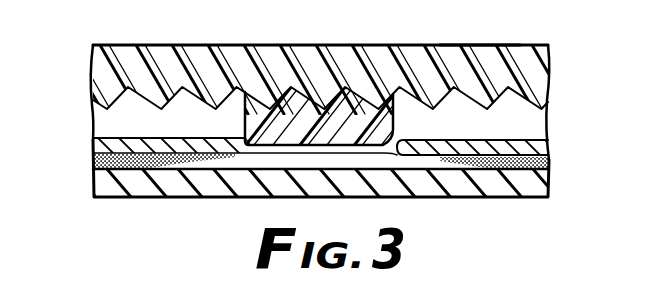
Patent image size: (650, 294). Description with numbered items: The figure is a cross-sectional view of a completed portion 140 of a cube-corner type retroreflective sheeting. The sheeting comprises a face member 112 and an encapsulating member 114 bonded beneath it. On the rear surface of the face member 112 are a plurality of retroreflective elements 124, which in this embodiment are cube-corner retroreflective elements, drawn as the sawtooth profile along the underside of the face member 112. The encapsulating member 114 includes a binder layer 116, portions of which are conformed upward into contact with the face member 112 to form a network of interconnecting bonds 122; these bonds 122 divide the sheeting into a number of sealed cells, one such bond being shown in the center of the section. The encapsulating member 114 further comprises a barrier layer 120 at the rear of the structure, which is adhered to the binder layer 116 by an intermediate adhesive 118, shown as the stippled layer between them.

The face member 112 is at (548, 68).
The encapsulating member 114 is at (563, 143).
The binder layer 116 is at (97, 146).
The intermediate adhesive 118 is at (98, 160).
The barrier layer 120 is at (498, 187).
The interconnecting bonds 122 is at (242, 127).
The retroreflective elements 124 is at (548, 130).
The portion of the retroreflective sheeting 140 is at (478, 40).